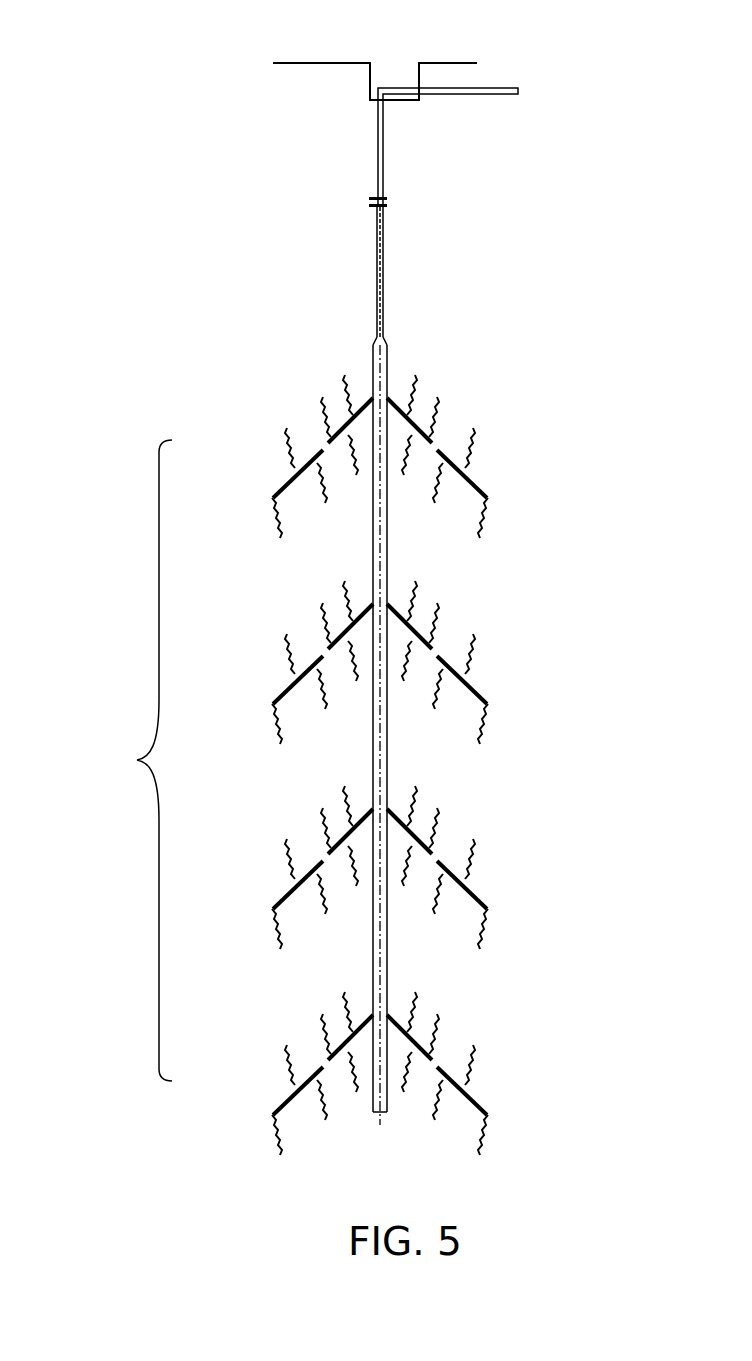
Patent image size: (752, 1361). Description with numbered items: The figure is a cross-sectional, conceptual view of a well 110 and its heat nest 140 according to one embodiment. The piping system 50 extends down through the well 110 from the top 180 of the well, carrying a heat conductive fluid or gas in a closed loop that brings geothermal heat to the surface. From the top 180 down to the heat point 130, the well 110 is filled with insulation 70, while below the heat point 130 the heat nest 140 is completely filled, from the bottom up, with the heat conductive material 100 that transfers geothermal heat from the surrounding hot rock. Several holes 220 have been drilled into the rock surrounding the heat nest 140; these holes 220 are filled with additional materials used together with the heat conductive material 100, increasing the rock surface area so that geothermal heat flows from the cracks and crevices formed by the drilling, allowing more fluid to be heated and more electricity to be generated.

The piping system 50 is at (385, 300).
The insulation 70 is at (387, 168).
The heat conductive material 100 is at (283, 478).
The well 110 is at (494, 578).
The heat point 130 is at (371, 340).
The heat nest 140 is at (135, 760).
The top of the well 180 is at (326, 60).
The holes 220 is at (472, 478).